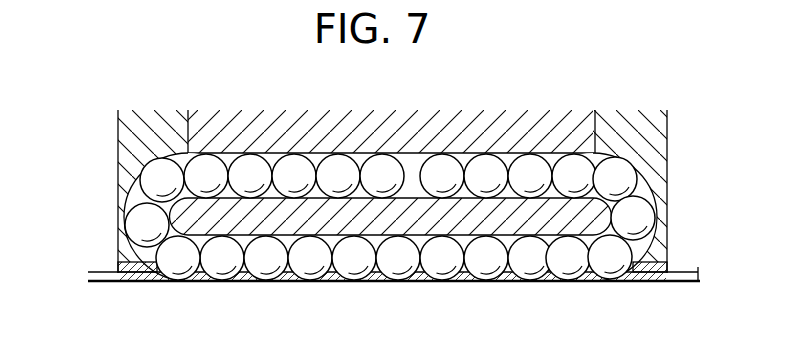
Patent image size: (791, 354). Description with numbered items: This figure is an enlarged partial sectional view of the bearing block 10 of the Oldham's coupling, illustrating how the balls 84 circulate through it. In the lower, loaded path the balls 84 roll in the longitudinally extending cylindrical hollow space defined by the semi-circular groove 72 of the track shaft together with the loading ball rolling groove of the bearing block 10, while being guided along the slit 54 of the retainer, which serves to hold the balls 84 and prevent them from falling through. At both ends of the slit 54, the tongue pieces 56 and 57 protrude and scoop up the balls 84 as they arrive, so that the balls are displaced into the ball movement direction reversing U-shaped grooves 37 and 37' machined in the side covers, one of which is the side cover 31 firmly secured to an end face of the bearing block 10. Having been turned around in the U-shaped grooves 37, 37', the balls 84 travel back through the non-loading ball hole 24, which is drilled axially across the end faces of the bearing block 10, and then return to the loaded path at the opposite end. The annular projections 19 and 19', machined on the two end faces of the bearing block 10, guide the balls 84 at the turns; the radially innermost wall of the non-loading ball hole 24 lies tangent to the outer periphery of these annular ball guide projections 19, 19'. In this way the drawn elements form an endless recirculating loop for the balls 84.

The bearing block 10 is at (389, 223).
The annular projection 19 is at (162, 241).
The annular projection 19' is at (656, 218).
The non-loading ball hole 24 is at (504, 150).
The side cover 31 is at (128, 137).
The ball movement direction reversing U-shaped groove 37 is at (155, 195).
The ball movement direction reversing U-shaped groove 37' is at (624, 195).
The longitudinally extending slit 54 is at (330, 277).
The tongue piece 56 is at (154, 279).
The tongue piece 57 is at (623, 284).
The semi-circular groove 72 is at (545, 283).
The balls 84 is at (150, 232).